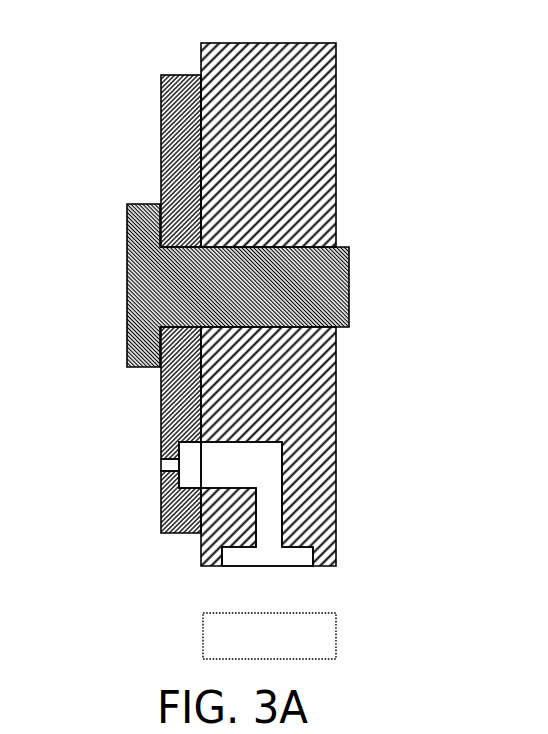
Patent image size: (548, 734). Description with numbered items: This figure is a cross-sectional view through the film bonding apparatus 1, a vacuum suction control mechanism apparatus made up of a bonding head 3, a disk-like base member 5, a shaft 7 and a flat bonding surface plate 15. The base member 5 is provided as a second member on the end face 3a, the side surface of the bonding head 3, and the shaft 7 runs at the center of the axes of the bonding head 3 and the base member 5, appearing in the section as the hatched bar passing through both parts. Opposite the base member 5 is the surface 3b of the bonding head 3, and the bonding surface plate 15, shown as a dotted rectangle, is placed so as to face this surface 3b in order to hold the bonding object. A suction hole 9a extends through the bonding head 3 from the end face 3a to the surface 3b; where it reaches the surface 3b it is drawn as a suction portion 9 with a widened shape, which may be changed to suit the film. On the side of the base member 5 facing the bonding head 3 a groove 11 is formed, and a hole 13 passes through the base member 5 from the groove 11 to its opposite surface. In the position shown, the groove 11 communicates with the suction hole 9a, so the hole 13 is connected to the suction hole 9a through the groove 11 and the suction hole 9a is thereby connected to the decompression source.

The film bonding apparatus 1 is at (277, 308).
The bonding head 3 is at (336, 160).
The end face 3a is at (202, 112).
The surface 3b is at (292, 567).
The base member 5 is at (167, 137).
The shaft 7 is at (343, 294).
The suction portion 9 is at (335, 541).
The suction hole 9a is at (270, 467).
The groove 11 is at (188, 477).
The hole 13 is at (170, 465).
The bonding surface plate 15 is at (336, 638).